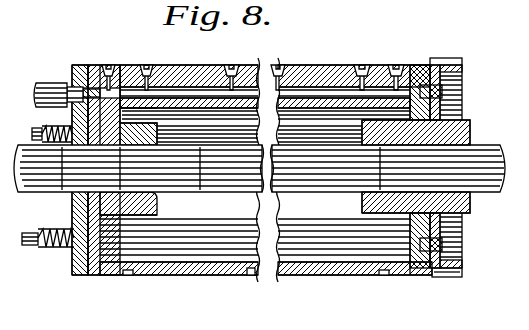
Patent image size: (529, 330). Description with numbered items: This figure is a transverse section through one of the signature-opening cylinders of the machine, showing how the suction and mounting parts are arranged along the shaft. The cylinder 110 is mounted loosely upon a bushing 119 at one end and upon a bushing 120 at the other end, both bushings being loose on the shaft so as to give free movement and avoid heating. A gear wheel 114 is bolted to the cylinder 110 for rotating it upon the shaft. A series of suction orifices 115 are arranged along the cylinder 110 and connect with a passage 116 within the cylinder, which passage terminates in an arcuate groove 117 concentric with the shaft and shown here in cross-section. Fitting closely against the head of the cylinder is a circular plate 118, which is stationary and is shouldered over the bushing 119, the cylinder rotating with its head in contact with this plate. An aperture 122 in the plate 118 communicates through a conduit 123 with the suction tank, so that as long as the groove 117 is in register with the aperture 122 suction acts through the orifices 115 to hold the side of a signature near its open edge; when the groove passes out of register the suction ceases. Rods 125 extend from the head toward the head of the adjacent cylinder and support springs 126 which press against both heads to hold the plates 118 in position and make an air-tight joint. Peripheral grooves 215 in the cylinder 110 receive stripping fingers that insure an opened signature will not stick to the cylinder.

The cylinder 110 is at (328, 277).
The gear wheel 114 is at (441, 277).
The suction orifices 115 is at (277, 66).
The passage 116 is at (299, 92).
The arcuate groove 117 is at (93, 67).
The circular plate 118 is at (82, 277).
The bushing 119 is at (77, 205).
The bushing 120 is at (472, 204).
The aperture 122 is at (70, 70).
The conduit 123 is at (48, 86).
The rods 125 is at (34, 129).
The springs 126 is at (54, 127).
The peripheral grooves 215 is at (128, 277).